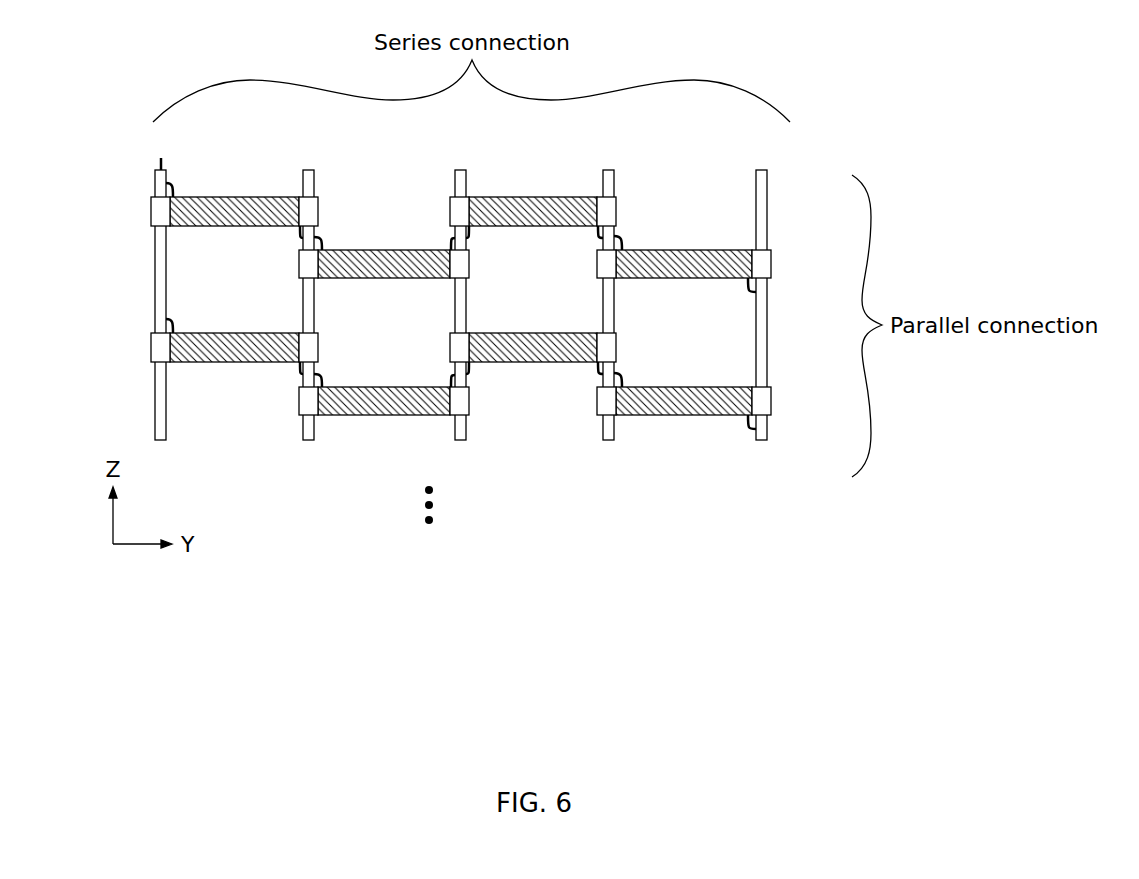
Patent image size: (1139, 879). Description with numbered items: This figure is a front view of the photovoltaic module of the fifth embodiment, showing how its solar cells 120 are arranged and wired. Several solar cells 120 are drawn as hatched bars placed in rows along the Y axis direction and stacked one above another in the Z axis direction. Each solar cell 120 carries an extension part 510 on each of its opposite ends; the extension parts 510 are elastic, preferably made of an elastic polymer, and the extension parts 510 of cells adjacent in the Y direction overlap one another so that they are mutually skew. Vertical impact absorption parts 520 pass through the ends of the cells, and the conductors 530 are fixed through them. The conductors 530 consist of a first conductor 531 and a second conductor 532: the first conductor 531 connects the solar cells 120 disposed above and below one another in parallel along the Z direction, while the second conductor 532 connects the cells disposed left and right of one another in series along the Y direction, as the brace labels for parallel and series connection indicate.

The solar cell 120 is at (696, 410).
The extension part 510 is at (466, 405).
The impact absorption part 520 is at (612, 183).
The conductor 530 is at (414, 370).
The first conductor 531 is at (163, 327).
The second conductor 532 is at (622, 245).